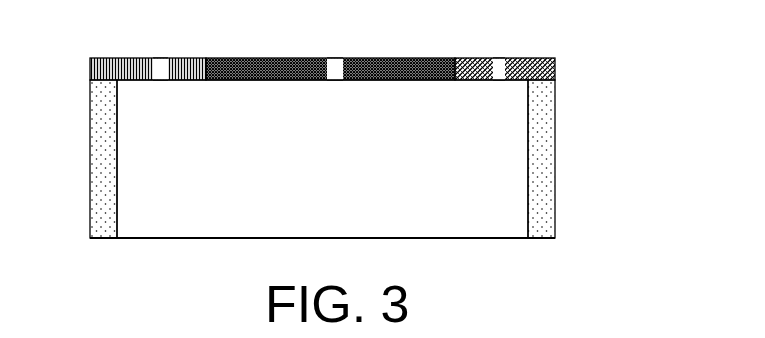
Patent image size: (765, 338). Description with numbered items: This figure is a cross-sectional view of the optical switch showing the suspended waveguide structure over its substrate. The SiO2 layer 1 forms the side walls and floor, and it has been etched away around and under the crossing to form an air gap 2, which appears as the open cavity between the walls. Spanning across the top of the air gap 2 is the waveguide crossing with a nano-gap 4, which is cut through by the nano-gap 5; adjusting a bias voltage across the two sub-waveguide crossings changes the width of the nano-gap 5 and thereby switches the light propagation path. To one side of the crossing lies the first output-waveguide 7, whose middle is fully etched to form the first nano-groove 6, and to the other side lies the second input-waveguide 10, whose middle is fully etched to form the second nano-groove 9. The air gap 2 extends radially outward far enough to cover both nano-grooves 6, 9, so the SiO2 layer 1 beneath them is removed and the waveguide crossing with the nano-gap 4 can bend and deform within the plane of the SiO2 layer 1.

The SiO2 layer 1 is at (541, 148).
The air gap 2 is at (480, 205).
The waveguide crossing with a nano-gap 4 is at (262, 58).
The nano-gap 5 is at (338, 64).
The first nano-groove 6 is at (167, 72).
The first output-waveguide 7 is at (110, 73).
The second nano-groove 9 is at (496, 63).
The second input-waveguide 10 is at (538, 72).